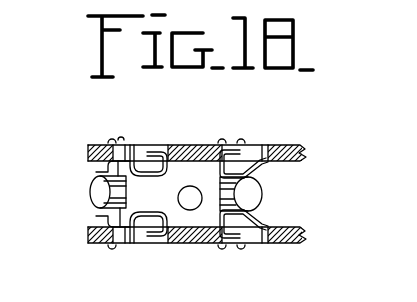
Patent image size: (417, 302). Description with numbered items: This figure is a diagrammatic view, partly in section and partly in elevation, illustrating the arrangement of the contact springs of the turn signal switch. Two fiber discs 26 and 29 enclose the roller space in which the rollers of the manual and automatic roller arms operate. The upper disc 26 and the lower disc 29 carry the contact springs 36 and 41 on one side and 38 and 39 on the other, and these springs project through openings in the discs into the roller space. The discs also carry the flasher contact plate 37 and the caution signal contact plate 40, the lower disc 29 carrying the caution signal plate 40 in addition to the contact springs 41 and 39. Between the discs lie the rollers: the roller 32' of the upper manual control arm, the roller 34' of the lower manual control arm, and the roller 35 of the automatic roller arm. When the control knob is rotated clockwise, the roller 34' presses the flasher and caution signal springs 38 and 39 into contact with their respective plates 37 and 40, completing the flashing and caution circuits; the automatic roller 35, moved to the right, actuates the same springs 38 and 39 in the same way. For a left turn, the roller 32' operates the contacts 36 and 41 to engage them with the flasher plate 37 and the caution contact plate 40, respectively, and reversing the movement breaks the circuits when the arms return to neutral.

The fiber disc 26 is at (308, 155).
The fiber disc 29 is at (308, 237).
The roller 32' is at (71, 194).
The roller 34' is at (281, 192).
The roller 35 is at (189, 199).
The contact spring 36 is at (134, 144).
The flasher contact plate 37 is at (195, 144).
The contact spring 38 is at (250, 146).
The contact spring 39 is at (257, 244).
The caution signal contact plate 40 is at (210, 240).
The contact spring 41 is at (147, 242).